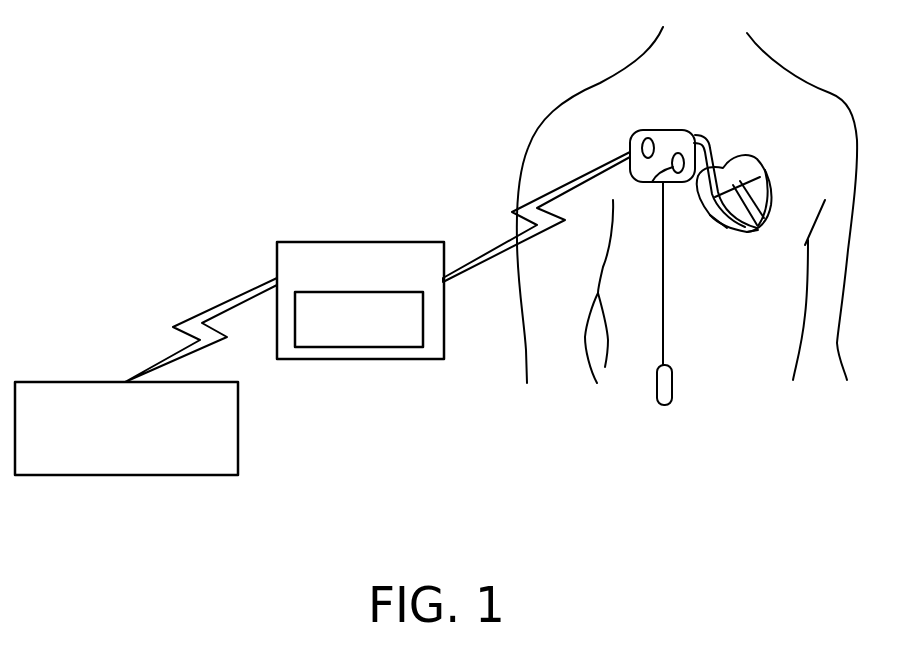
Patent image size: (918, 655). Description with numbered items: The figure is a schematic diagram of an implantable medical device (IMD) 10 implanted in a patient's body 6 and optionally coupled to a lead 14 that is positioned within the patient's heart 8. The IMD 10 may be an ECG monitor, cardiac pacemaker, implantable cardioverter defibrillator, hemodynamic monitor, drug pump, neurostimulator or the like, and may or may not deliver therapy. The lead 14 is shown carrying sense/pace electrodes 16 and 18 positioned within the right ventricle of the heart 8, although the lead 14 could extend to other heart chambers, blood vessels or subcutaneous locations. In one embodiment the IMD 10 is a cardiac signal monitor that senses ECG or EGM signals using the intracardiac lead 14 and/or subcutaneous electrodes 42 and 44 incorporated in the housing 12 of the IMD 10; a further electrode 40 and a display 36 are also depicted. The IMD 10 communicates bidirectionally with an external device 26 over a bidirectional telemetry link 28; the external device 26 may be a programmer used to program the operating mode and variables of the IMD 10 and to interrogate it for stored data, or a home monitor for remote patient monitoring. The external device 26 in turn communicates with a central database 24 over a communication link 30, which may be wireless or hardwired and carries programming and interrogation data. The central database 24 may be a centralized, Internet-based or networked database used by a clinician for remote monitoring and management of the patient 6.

The patient's body 6 is at (830, 93).
The heart 8 is at (755, 165).
The implantable medical device 10 is at (660, 130).
The housing 12 is at (656, 116).
The lead 14 is at (708, 140).
The sense/pace electrode 16 is at (723, 230).
The sense/pace electrode 18 is at (757, 230).
The central database 24 is at (87, 382).
The external device 26 is at (360, 306).
The bidirectional telemetry link 28 is at (500, 243).
The communication link 30 is at (253, 287).
The display 36 is at (340, 347).
The sensor 40 is at (672, 377).
The subcutaneous electrode 42 is at (648, 182).
The subcutaneous electrode 44 is at (642, 148).